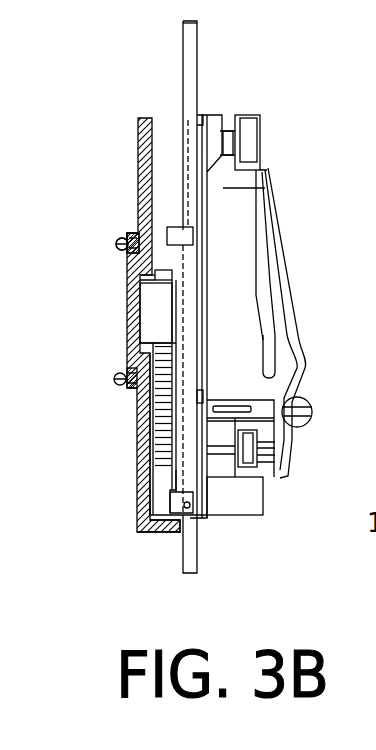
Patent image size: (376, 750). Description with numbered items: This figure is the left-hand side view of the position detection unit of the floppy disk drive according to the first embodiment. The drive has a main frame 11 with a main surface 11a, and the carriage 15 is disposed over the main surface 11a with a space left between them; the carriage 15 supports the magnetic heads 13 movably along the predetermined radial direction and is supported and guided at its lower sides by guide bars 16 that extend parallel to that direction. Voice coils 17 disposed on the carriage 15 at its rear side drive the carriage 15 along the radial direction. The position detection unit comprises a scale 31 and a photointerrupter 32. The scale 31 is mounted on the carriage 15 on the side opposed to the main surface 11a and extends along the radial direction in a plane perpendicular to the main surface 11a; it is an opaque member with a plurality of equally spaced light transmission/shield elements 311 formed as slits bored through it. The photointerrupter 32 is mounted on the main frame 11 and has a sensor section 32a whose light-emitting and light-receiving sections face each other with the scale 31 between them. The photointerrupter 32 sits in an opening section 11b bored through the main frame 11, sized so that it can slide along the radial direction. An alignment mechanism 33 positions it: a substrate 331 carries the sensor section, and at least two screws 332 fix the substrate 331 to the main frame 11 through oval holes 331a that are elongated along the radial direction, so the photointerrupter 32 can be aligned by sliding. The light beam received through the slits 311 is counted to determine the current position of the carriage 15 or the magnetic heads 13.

The main frame 11 is at (137, 495).
The main surface 11a is at (157, 533).
The opening section 11b is at (124, 280).
The magnetic heads 13 is at (225, 116).
The carriage 15 is at (267, 478).
The guide bars 16 is at (200, 36).
The voice coils 17 is at (232, 508).
The scale 31 is at (175, 470).
The light transmission/shield elements 311 is at (160, 440).
The photointerrupter 32 is at (150, 348).
The sensor section 32a is at (157, 324).
The alignment mechanism 33 is at (108, 255).
The substrate 331 is at (140, 297).
The oval holes 331a is at (119, 237).
The screws 332 is at (122, 236).